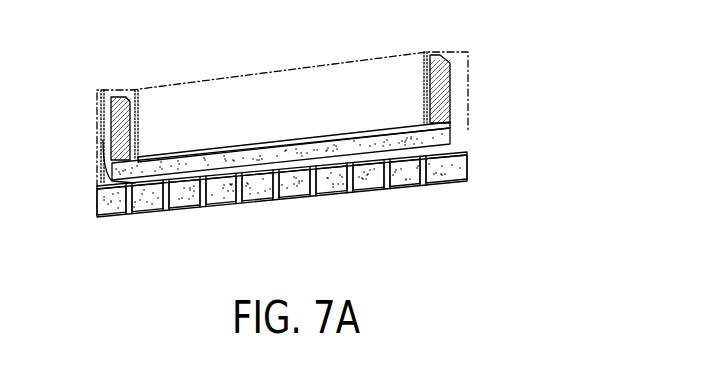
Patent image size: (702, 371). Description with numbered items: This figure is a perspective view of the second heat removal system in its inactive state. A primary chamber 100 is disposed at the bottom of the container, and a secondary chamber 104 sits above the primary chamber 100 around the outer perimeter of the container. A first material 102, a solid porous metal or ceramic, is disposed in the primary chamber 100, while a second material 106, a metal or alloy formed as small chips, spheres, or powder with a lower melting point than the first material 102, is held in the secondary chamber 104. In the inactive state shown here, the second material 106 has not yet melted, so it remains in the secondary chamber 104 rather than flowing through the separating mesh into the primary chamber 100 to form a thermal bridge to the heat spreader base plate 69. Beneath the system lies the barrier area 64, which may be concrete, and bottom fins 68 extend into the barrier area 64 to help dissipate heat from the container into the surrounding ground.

The primary chamber 100 is at (292, 137).
The first material 102 is at (292, 142).
The secondary chamber 104 is at (122, 92).
The second material 106 is at (118, 125).
The heat spreader base plate 69 is at (455, 150).
The barrier area 64 is at (465, 171).
The bottom fins 68 is at (203, 208).